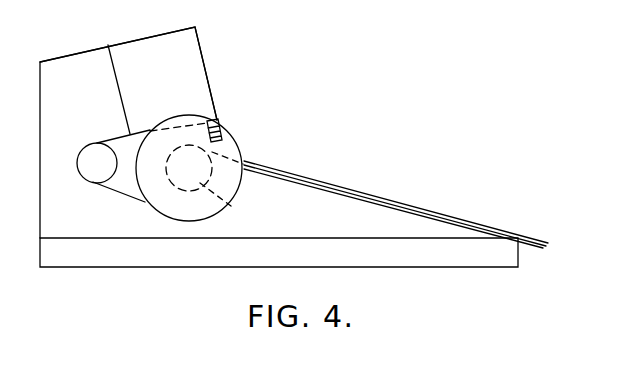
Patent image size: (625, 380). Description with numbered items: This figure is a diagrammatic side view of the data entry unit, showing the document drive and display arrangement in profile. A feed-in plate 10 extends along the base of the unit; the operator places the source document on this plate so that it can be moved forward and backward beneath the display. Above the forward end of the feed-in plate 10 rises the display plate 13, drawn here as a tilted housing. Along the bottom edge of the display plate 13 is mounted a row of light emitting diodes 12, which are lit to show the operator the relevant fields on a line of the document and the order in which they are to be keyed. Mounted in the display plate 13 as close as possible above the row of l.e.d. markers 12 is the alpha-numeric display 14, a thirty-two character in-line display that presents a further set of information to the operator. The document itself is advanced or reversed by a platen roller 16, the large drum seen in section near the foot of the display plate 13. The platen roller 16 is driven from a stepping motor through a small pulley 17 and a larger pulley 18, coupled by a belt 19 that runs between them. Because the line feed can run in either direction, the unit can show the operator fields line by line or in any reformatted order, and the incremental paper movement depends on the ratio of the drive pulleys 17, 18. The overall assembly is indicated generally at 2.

The housing assembly 2 is at (193, 129).
The feed-in plate 10 is at (372, 195).
The light emitting diodes 12 is at (223, 123).
The display plate 13 is at (200, 35).
The alpha-numeric display 14 is at (207, 72).
The platen roller 16 is at (223, 202).
The pulley 17 is at (93, 182).
The pulley 18 is at (244, 148).
The belt 19 is at (130, 197).